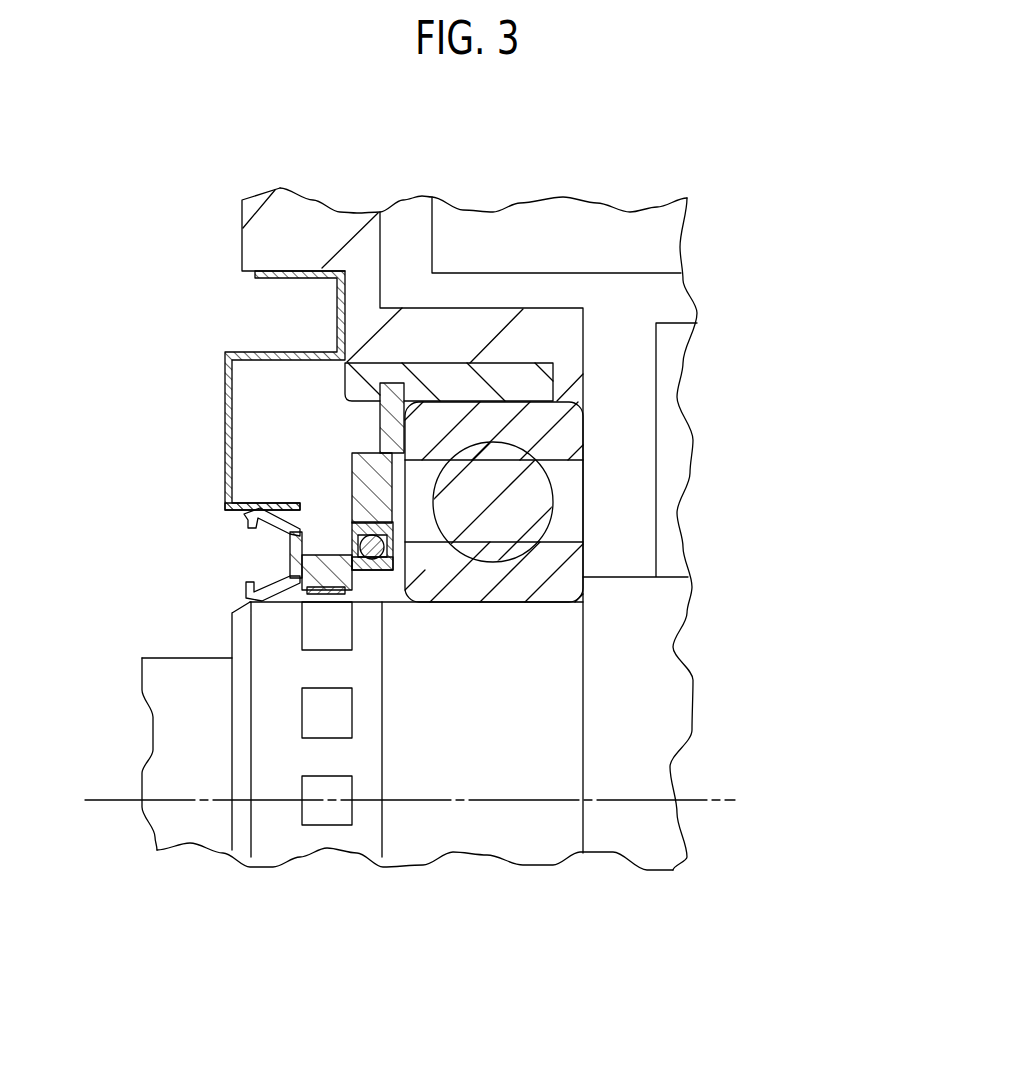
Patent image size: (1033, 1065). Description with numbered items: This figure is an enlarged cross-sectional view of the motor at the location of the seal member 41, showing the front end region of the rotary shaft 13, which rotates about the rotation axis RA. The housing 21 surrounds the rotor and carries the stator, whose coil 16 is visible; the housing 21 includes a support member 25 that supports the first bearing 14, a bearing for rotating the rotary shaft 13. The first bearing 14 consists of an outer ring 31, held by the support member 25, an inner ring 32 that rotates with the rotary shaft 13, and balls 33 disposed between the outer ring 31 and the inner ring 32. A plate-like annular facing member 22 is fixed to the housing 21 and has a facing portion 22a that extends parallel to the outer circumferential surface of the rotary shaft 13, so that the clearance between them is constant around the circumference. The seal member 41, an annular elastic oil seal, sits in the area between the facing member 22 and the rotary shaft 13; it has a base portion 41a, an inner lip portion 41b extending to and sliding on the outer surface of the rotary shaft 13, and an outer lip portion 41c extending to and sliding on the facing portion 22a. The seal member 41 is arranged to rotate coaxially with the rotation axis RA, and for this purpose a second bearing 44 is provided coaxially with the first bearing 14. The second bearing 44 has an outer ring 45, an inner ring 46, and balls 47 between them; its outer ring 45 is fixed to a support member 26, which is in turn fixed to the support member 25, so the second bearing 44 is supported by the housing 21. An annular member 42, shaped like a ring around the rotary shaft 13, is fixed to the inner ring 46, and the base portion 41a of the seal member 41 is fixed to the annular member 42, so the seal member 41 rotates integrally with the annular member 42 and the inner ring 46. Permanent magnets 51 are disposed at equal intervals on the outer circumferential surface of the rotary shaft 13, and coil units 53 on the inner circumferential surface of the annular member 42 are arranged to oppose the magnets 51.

The rotary shaft 13 is at (540, 843).
The first bearing 14 is at (615, 502).
The coil 16 is at (622, 230).
The housing 21 is at (315, 218).
The facing member 22 is at (226, 433).
The facing portion 22a is at (275, 502).
The support member 25 is at (510, 377).
The support member 26 is at (388, 422).
The outer ring 31 is at (572, 430).
The inner ring 32 is at (553, 550).
The balls 33 is at (542, 495).
The seal member 41 is at (185, 554).
The base portion 41a is at (290, 553).
The inner lip portion 41b is at (293, 580).
The outer lip portion 41c is at (275, 528).
The annular member 42 is at (313, 572).
The second bearing 44 is at (587, 607).
The outer ring 45 is at (392, 525).
The inner ring 46 is at (380, 570).
The balls 47 is at (385, 548).
The magnets 51 is at (340, 635).
The coil units 53 is at (327, 595).
The rotation axis RA is at (737, 799).